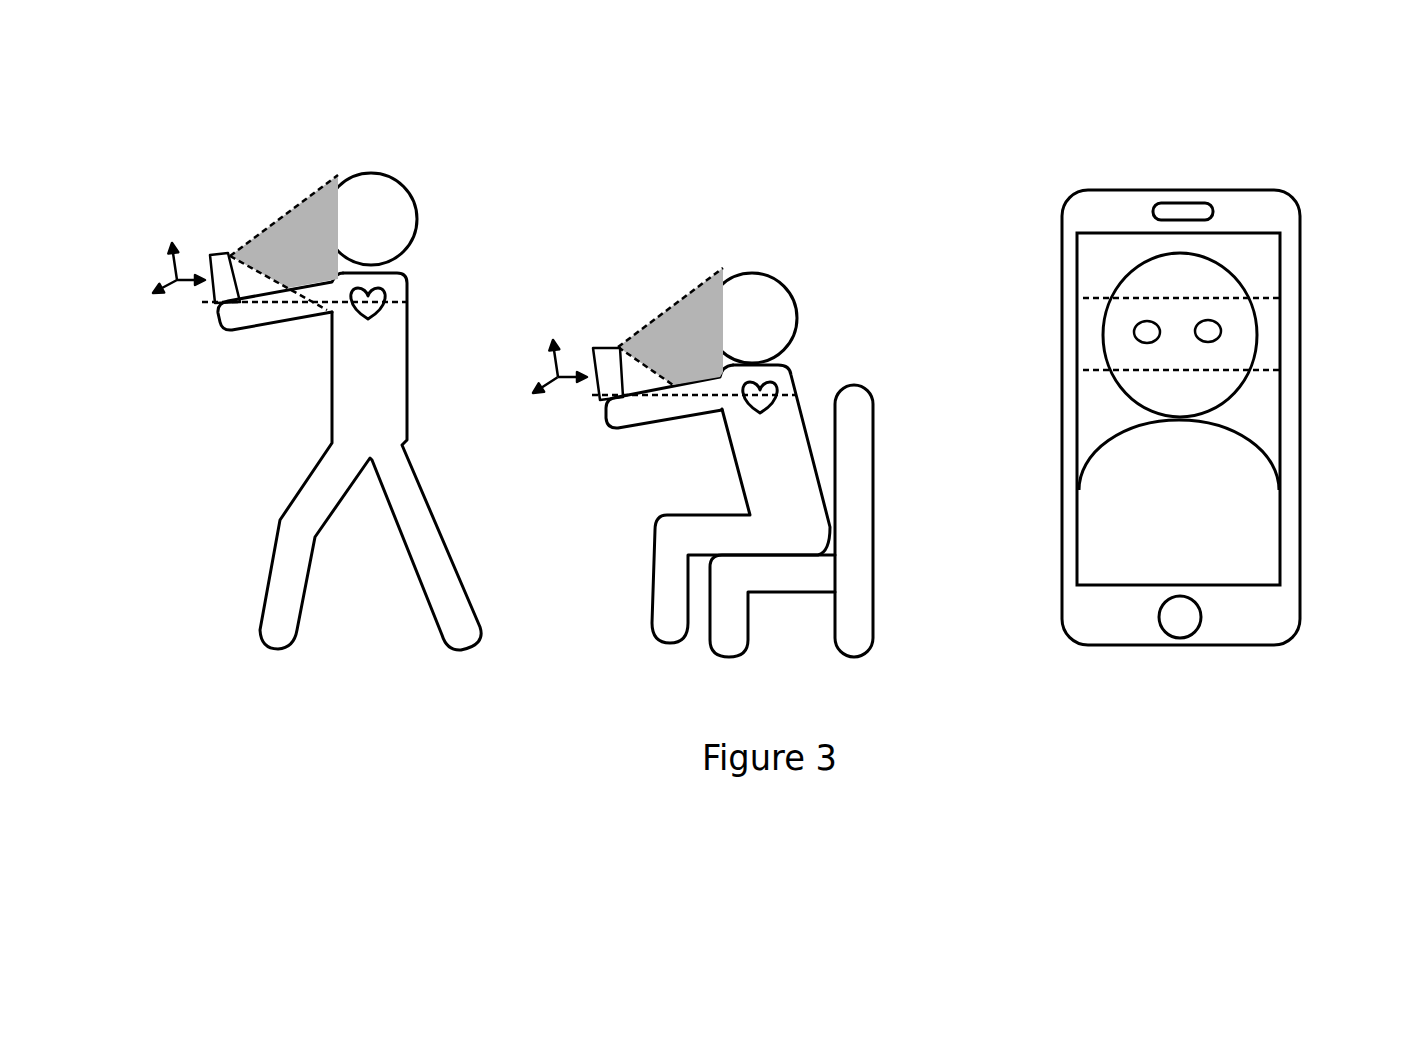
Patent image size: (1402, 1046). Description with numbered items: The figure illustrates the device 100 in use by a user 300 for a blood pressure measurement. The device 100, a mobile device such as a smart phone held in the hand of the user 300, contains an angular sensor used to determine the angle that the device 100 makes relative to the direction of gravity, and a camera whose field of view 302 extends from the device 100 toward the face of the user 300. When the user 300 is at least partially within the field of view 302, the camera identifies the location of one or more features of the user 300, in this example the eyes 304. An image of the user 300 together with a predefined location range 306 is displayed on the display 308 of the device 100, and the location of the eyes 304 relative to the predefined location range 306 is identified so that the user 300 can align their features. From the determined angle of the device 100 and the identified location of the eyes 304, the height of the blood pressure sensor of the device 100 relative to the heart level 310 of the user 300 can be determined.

The device 100 is at (222, 260).
The user 300 is at (400, 182).
The field of view 302 is at (300, 223).
The eyes 304 is at (1208, 331).
The predefined location range 306 is at (1092, 295).
The display 308 is at (1245, 418).
The heart level 310 is at (200, 302).